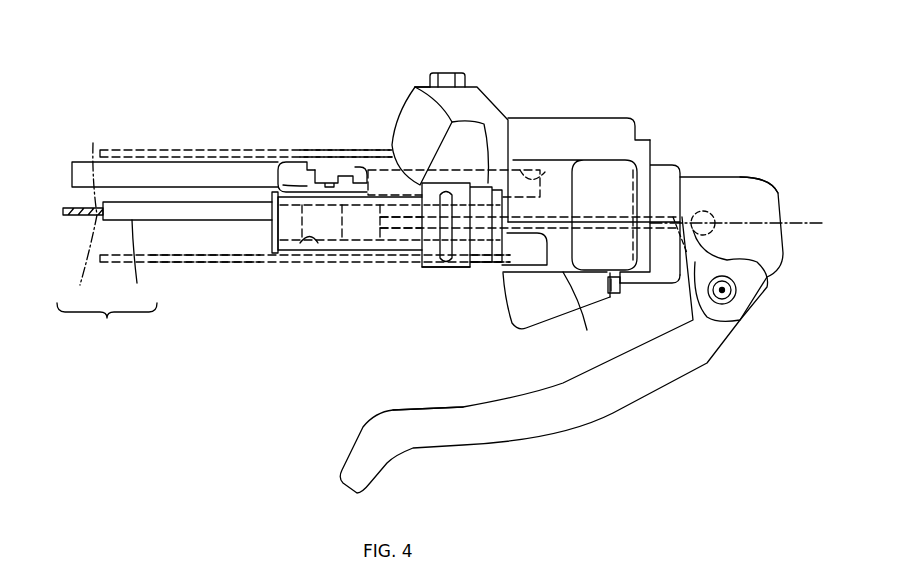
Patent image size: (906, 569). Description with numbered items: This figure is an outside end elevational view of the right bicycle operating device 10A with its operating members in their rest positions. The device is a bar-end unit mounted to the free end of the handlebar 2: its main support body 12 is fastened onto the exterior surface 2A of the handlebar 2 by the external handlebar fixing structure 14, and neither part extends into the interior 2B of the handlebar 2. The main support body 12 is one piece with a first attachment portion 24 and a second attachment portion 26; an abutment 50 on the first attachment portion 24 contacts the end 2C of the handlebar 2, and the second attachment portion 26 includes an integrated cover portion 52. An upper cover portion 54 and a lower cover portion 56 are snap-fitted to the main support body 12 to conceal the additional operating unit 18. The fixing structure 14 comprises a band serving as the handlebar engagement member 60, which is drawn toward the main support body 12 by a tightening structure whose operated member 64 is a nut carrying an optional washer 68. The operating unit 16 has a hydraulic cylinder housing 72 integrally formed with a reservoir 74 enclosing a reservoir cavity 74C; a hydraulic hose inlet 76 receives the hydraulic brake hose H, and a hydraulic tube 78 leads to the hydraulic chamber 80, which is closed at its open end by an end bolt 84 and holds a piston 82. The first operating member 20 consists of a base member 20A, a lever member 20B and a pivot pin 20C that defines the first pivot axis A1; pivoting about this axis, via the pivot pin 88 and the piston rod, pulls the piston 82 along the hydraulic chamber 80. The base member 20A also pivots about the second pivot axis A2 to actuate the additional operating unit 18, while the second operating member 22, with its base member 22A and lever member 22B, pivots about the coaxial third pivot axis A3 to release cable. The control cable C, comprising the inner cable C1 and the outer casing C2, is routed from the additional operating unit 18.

The hydraulic brake hose H is at (83, 160).
The handlebar 2 is at (236, 147).
The exterior surface of the handlebar 2A is at (323, 150).
The interior of the handlebar 2B is at (211, 240).
The end of the handlebar 2C is at (500, 270).
The bicycle operating device 10A is at (685, 88).
The main support body 12 is at (493, 90).
The external handlebar fixing structure 14 is at (427, 270).
The operating unit 16 is at (290, 253).
The additional operating unit 18 is at (607, 160).
The first operating member 20 is at (615, 415).
The base member 20A is at (765, 178).
The lever member 20B is at (446, 430).
The pivot pin 20C is at (718, 310).
The second operating member 22 is at (546, 335).
The base member 22A is at (615, 295).
The lever member 22B is at (510, 322).
The first attachment portion 24 is at (417, 130).
The second attachment portion 26 is at (522, 250).
The abutment 50 is at (485, 195).
The integrated cover portion 52 is at (578, 308).
The upper cover portion 54 is at (655, 284).
The lower cover portion 56 is at (568, 118).
The handlebar engagement member 60 is at (440, 235).
The operated member 64 is at (447, 73).
The washer 68 is at (423, 87).
The hydraulic cylinder housing 72 is at (350, 240).
The reservoir 74 is at (378, 170).
The reservoir cavity 74C is at (557, 160).
The hydraulic hose inlet 76 is at (289, 162).
The hydraulic tube 78 is at (343, 167).
The hydraulic chamber 80 is at (310, 245).
The piston 82 is at (375, 245).
The end bolt 84 is at (272, 233).
The pivot pin 88 is at (702, 211).
The first pivot axis A1 is at (724, 286).
The second pivot axis A2 is at (803, 226).
The third pivot axis A3 is at (602, 222).
The control cable C is at (107, 320).
The inner cable C1 is at (82, 221).
The outer casing C2 is at (136, 260).